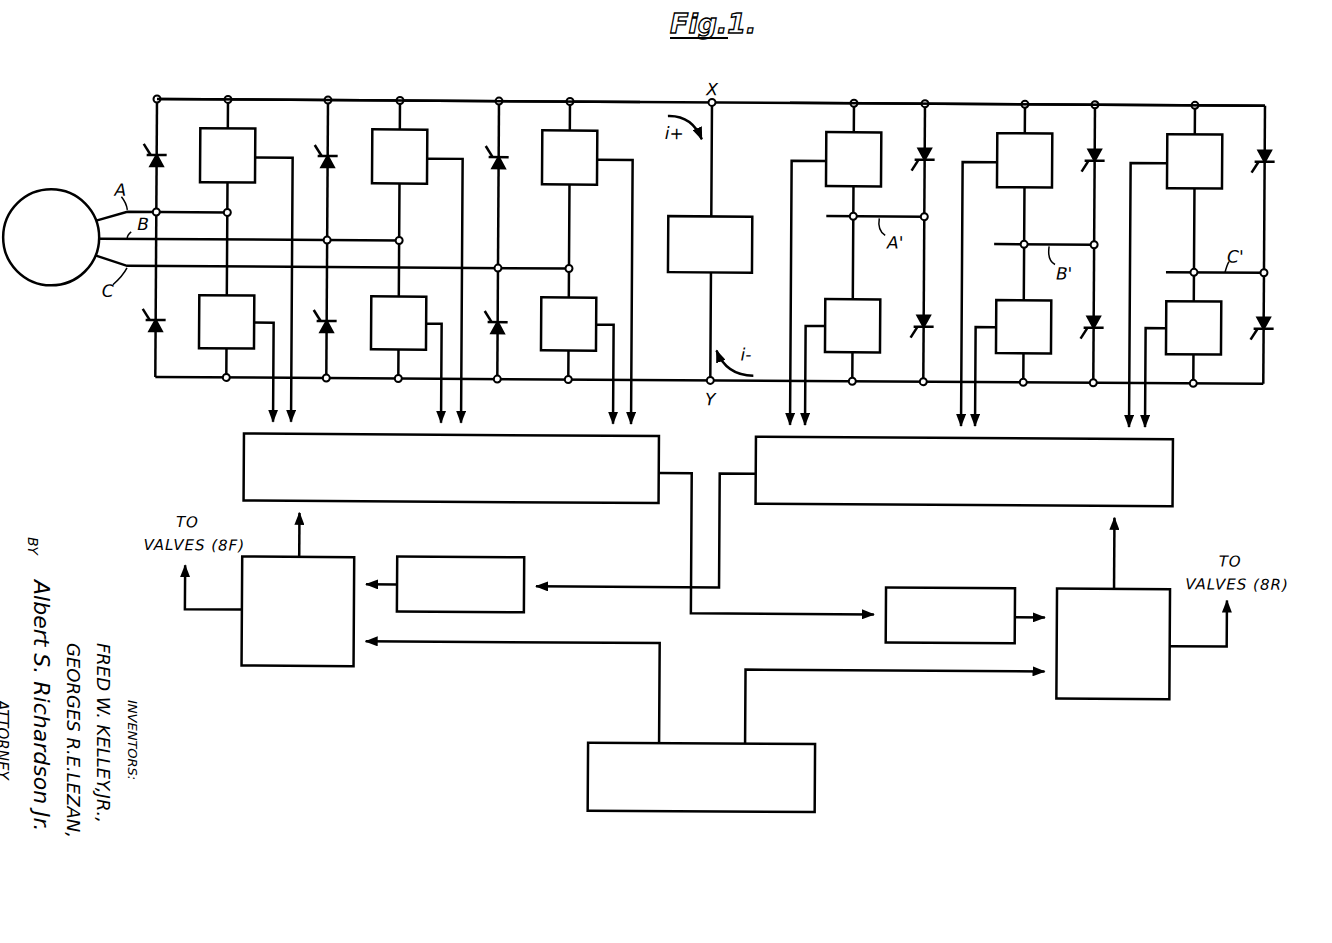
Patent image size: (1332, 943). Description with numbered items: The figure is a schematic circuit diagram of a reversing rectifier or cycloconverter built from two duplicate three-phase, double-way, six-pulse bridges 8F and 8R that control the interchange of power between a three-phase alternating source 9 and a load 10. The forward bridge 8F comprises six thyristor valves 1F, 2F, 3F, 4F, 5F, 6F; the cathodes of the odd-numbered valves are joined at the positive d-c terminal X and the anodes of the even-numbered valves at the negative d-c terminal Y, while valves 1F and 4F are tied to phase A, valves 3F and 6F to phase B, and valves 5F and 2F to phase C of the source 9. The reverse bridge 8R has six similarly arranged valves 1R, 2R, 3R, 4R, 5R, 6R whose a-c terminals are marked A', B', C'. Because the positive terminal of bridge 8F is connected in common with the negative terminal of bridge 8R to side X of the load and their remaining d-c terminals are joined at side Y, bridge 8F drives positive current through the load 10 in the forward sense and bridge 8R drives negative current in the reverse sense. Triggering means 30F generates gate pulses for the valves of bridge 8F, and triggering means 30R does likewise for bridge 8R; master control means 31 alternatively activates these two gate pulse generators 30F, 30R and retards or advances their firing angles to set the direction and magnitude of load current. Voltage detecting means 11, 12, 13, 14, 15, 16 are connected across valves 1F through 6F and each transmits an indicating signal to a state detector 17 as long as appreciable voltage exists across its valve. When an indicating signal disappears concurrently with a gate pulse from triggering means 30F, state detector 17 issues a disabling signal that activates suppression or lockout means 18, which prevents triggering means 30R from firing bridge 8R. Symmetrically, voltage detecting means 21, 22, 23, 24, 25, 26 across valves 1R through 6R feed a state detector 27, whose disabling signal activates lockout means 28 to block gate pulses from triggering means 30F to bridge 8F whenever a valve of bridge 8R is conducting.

The forward bridge 8F is at (390, 86).
The reverse bridge 8R is at (1015, 89).
The source 9 is at (48, 190).
The load 10 is at (738, 212).
The valve 1F is at (165, 158).
The valve 2F is at (507, 323).
The valve 3F is at (336, 158).
The valve 4F is at (165, 323).
The valve 5F is at (507, 158).
The valve 6F is at (336, 323).
The valve 1R is at (933, 319).
The valve 2R is at (1273, 152).
The valve 3R is at (1103, 319).
The valve 4R is at (933, 152).
The valve 5R is at (1273, 319).
The valve 6R is at (1103, 152).
The voltage detecting means 11 is at (227, 155).
The voltage detecting means 12 is at (568, 323).
The voltage detecting means 13 is at (399, 156).
The voltage detecting means 14 is at (226, 321).
The voltage detecting means 15 is at (569, 157).
The voltage detecting means 16 is at (398, 322).
The voltage detecting means 21 is at (852, 325).
The voltage detecting means 22 is at (1194, 161).
The voltage detecting means 23 is at (1023, 326).
The voltage detecting means 24 is at (853, 159).
The voltage detecting means 25 is at (1193, 327).
The voltage detecting means 26 is at (1024, 160).
The state detector 17 is at (246, 449).
The state detector 27 is at (1175, 448).
The suppression or lockout means 28 is at (465, 555).
The suppression or lockout means 18 is at (955, 583).
The triggering means 30F is at (306, 665).
The triggering means 30R is at (1118, 693).
The master control means 31 is at (708, 808).